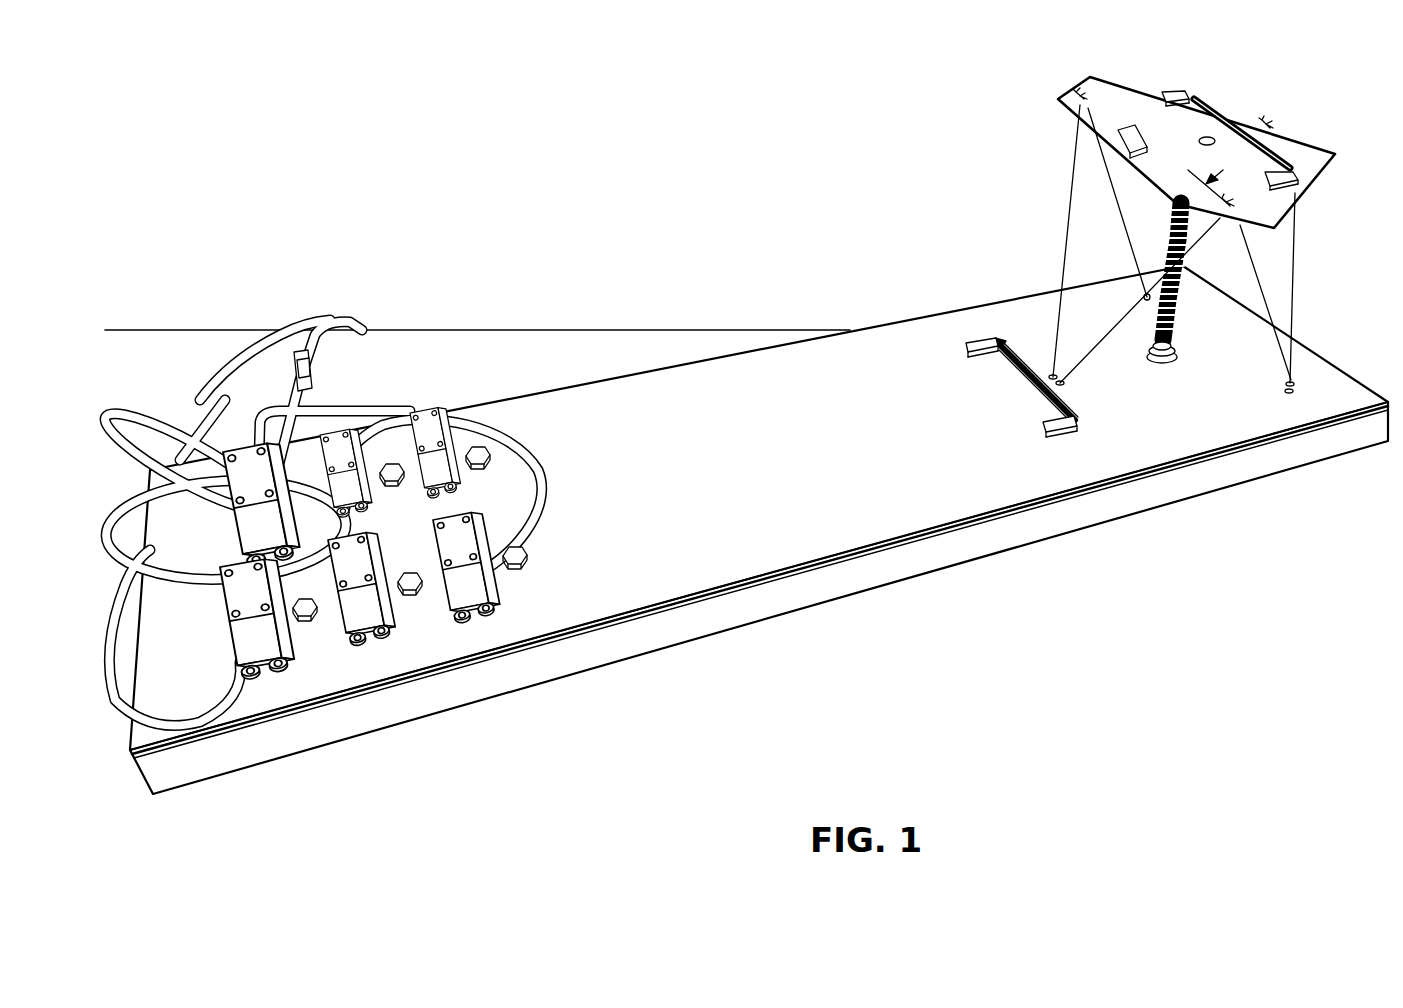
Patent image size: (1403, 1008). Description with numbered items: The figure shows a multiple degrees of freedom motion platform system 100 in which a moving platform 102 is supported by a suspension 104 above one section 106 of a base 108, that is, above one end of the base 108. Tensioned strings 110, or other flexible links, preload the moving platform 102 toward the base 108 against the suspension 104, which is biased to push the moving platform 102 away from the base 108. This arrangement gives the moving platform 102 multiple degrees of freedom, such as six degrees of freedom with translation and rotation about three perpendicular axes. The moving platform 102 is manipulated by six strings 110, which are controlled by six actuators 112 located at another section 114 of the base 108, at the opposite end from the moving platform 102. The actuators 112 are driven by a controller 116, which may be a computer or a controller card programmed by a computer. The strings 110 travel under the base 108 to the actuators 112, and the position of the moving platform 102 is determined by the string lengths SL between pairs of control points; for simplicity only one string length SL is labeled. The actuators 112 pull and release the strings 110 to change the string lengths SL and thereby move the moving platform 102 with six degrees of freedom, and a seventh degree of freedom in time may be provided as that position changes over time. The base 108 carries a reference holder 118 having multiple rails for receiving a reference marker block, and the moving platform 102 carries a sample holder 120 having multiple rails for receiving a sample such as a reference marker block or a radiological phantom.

The multiple degrees of freedom motion platform system 100 is at (226, 215).
The moving platform 102 is at (1305, 158).
The suspension 104 is at (1193, 320).
The section of base 106 is at (1236, 520).
The base 108 is at (790, 597).
The tensioned strings 110 is at (1130, 227).
The actuators 112 is at (245, 460).
The another section of base 114 is at (478, 728).
The controller 116 is at (245, 527).
The reference holder 118 is at (975, 325).
The sample holder 120 is at (1268, 112).
The string length SL is at (1028, 367).